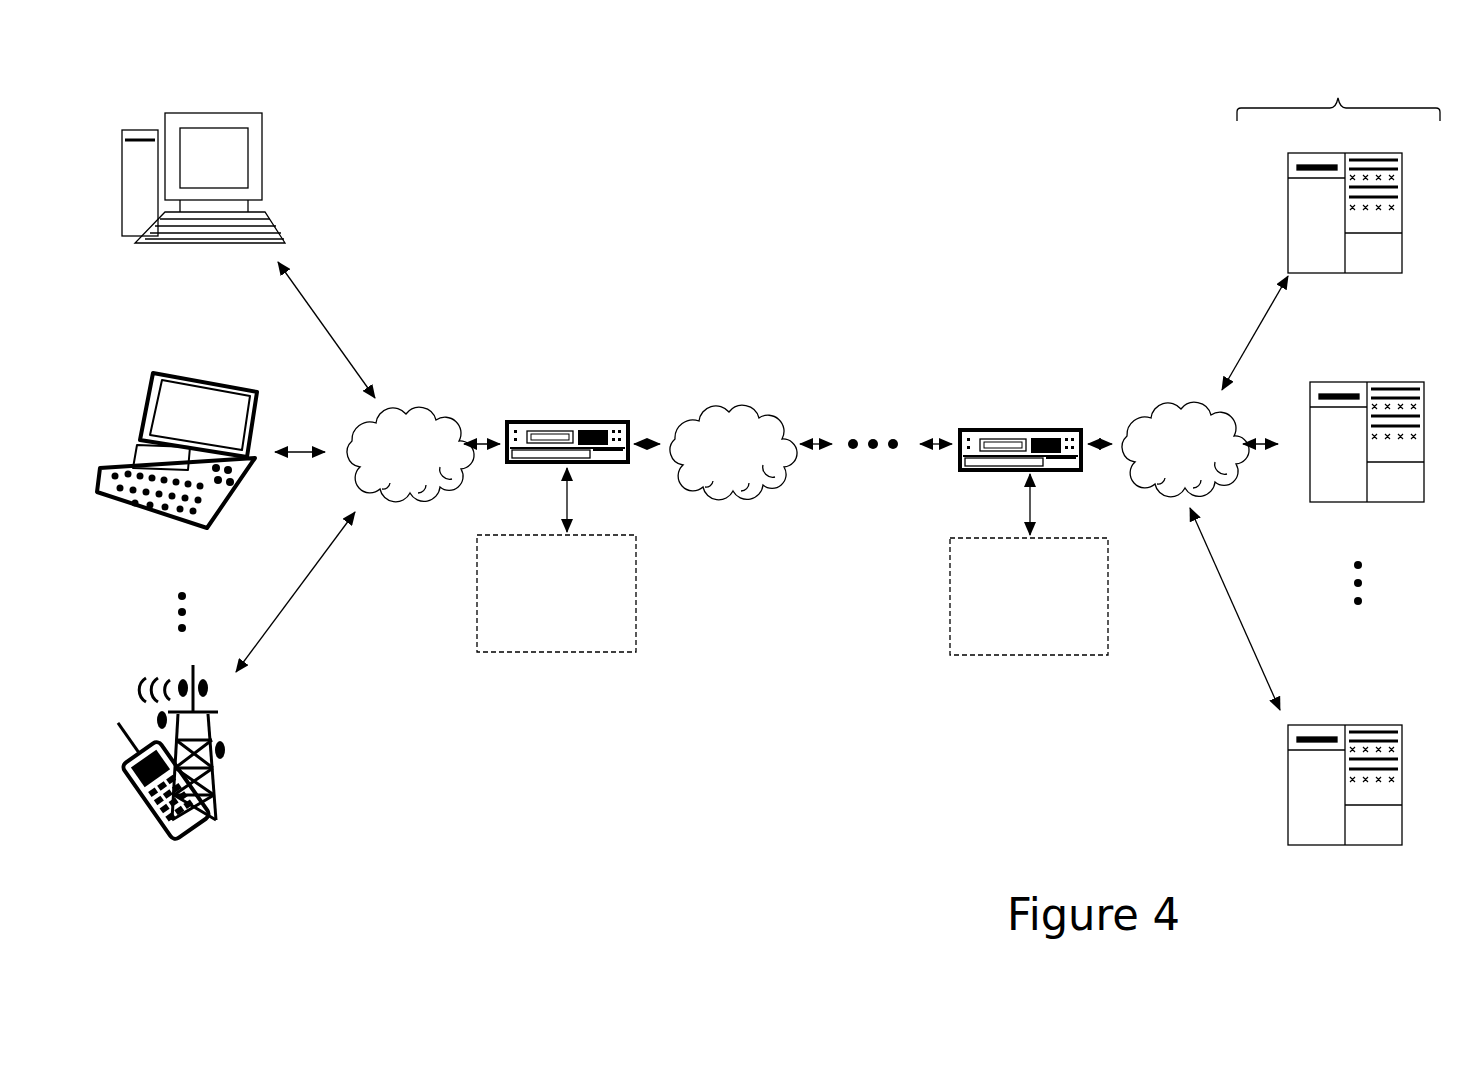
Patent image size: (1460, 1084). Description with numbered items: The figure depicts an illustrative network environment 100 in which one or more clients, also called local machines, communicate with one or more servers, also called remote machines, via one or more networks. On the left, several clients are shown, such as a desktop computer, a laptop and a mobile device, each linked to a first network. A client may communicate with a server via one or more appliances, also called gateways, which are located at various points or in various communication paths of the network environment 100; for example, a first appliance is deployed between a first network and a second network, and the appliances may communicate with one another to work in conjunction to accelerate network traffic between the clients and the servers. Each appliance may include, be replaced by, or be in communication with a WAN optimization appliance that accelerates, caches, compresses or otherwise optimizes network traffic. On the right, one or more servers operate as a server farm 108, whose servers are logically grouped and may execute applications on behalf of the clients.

The network environment 100 is at (776, 151).
The server farm 108 is at (1338, 77).